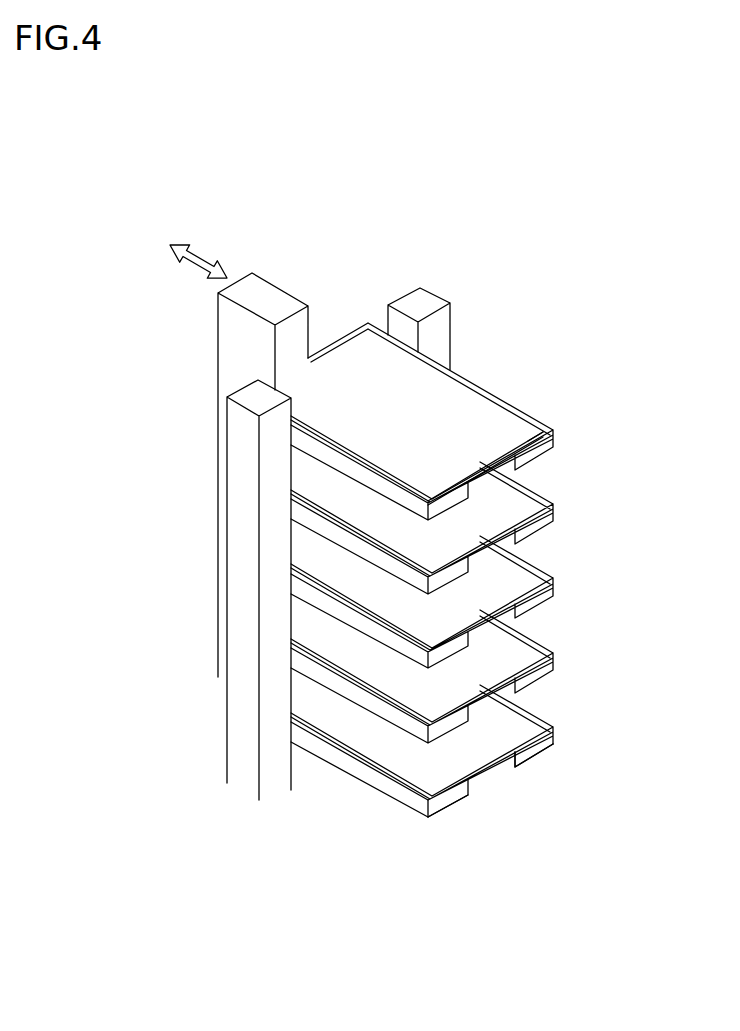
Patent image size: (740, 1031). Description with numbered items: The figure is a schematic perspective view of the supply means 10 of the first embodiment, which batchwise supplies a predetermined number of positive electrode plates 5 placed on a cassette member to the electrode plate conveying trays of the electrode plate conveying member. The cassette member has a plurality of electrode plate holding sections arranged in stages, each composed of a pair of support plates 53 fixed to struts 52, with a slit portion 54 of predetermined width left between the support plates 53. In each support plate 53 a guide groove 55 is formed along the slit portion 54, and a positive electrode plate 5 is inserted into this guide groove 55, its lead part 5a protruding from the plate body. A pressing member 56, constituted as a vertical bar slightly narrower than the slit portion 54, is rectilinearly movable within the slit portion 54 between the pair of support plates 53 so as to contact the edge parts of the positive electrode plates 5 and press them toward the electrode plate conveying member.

The substrate cassette 10 is at (582, 256).
The positive electrode plate 5 is at (452, 391).
The lead part 5a is at (522, 430).
The strut 52 is at (436, 296).
The support plate 53 is at (523, 758).
The slit portion 54 is at (470, 787).
The guide groove 55 is at (537, 738).
The pressing member 56 is at (272, 293).